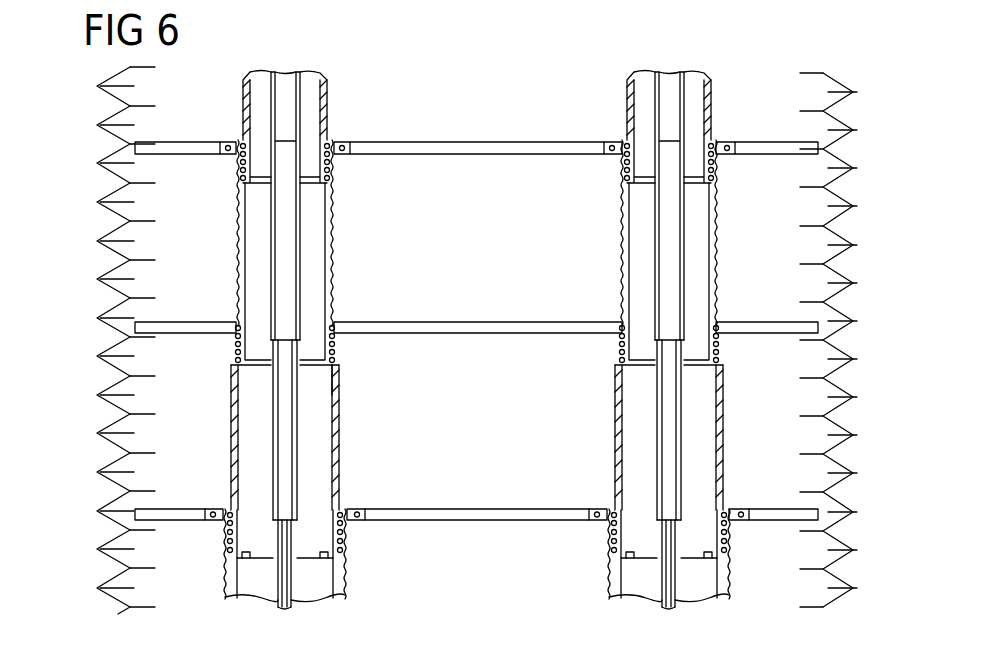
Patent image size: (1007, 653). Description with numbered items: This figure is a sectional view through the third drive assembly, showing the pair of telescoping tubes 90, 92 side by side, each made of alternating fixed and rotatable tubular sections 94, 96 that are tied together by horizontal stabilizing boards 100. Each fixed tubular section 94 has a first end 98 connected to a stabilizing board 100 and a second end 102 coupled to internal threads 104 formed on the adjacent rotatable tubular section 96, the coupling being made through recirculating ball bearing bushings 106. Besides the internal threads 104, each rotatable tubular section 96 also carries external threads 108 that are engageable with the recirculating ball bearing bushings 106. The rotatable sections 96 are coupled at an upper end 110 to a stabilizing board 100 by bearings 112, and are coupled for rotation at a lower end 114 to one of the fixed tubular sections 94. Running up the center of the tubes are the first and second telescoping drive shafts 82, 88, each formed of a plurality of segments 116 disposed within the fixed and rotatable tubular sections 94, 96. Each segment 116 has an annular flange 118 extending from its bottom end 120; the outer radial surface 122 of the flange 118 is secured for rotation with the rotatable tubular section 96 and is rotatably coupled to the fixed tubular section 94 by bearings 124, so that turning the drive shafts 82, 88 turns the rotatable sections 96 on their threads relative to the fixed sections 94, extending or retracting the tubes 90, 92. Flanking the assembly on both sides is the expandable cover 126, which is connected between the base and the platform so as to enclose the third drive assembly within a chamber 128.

The first telescoping drive shaft 82 is at (252, 271).
The second telescoping drive shaft 88 is at (638, 252).
The telescoping tube 90 is at (733, 205).
The telescoping tube 92 is at (222, 200).
The fixed tubular section 94 is at (340, 462).
The rotatable tubular section 96 is at (334, 252).
The first end 98 is at (336, 326).
The stabilizing board 100 is at (503, 140).
The second end 102 is at (347, 546).
The internal threads 104 is at (334, 594).
The recirculating ball bearing bushings 106 is at (337, 368).
The external threads 108 is at (335, 266).
The upper end 110 is at (334, 140).
The bearings 112 is at (343, 154).
The lower end 114 is at (243, 364).
The segments 116 is at (303, 100).
The annular flange 118 is at (308, 372).
The bottom end 120 is at (303, 355).
The outer radial surface 122 is at (335, 380).
The bearings 124 is at (243, 557).
The expandable cover 126 is at (106, 177).
The chamber 128 is at (772, 97).